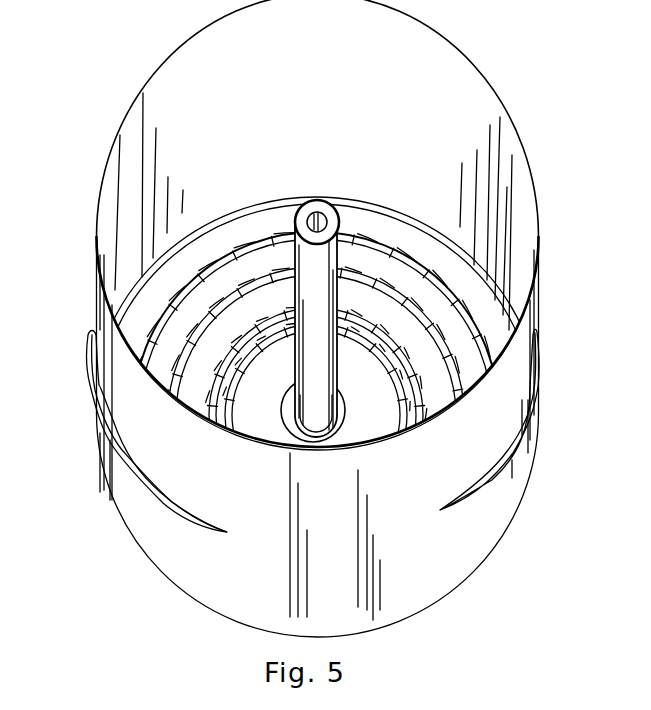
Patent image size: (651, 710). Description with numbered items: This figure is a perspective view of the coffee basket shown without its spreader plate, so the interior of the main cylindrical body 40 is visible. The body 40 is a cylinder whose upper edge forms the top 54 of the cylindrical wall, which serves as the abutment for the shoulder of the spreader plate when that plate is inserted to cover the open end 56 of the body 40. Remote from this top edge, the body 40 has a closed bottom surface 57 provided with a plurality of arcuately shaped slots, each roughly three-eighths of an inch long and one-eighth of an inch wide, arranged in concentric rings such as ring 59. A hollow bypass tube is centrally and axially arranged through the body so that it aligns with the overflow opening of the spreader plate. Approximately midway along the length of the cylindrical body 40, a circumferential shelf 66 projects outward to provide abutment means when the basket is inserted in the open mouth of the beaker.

The main cylindrical body 40 is at (438, 557).
The top of the cylindrical wall 54 is at (96, 212).
The open end 56 is at (188, 72).
The closed bottom surface 57 is at (253, 219).
The concentric ring of slots 59 is at (123, 367).
The circumferential shelf 66 is at (162, 495).